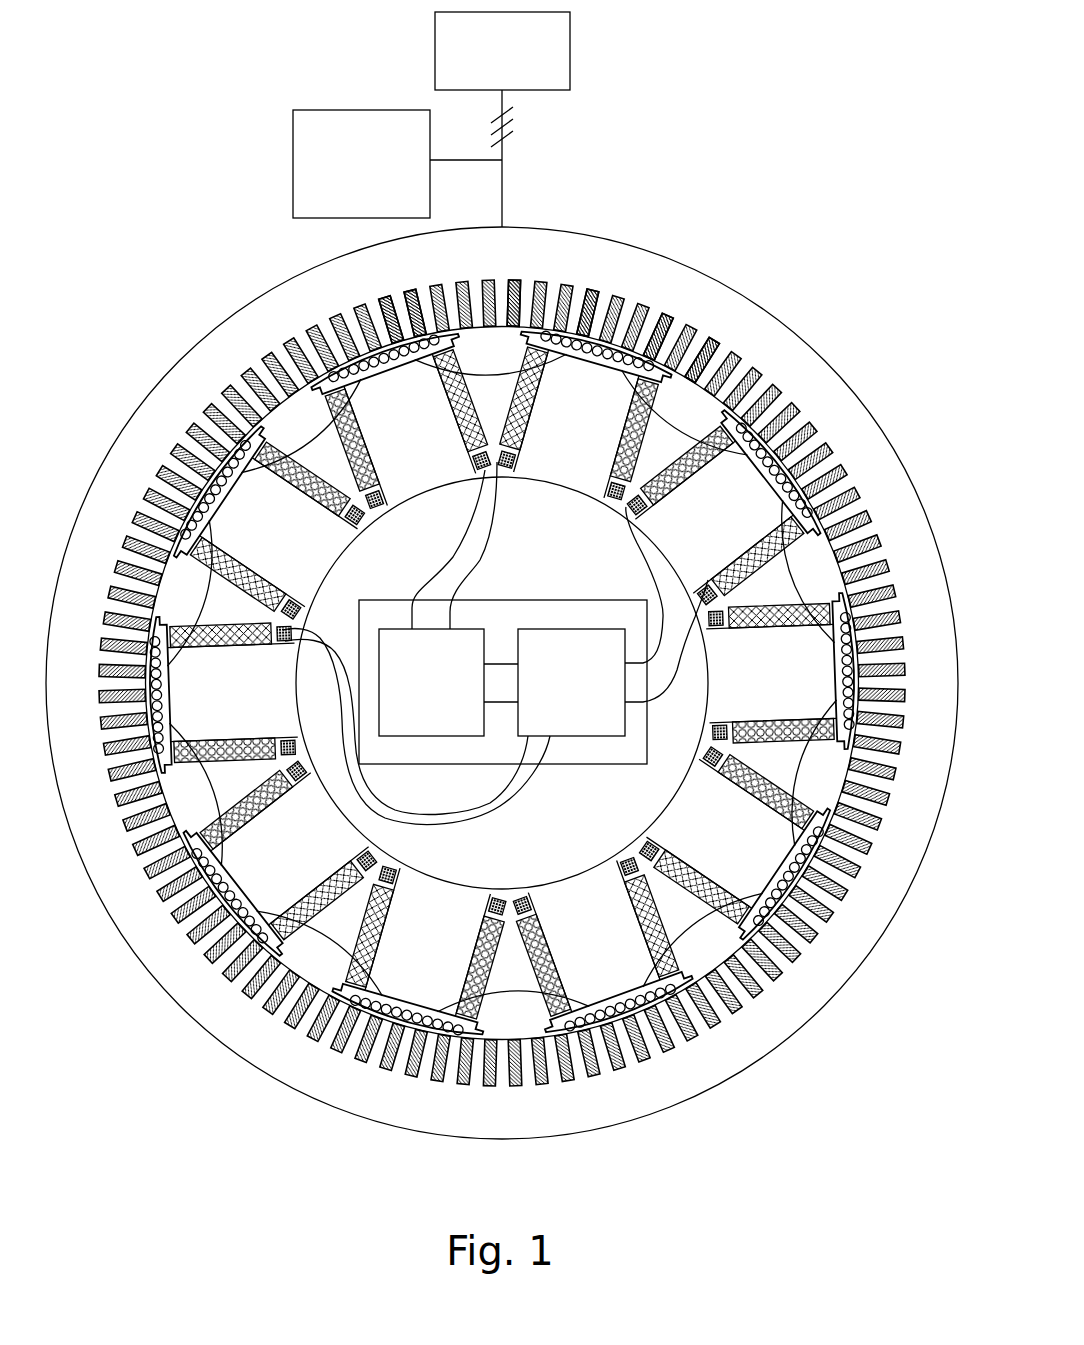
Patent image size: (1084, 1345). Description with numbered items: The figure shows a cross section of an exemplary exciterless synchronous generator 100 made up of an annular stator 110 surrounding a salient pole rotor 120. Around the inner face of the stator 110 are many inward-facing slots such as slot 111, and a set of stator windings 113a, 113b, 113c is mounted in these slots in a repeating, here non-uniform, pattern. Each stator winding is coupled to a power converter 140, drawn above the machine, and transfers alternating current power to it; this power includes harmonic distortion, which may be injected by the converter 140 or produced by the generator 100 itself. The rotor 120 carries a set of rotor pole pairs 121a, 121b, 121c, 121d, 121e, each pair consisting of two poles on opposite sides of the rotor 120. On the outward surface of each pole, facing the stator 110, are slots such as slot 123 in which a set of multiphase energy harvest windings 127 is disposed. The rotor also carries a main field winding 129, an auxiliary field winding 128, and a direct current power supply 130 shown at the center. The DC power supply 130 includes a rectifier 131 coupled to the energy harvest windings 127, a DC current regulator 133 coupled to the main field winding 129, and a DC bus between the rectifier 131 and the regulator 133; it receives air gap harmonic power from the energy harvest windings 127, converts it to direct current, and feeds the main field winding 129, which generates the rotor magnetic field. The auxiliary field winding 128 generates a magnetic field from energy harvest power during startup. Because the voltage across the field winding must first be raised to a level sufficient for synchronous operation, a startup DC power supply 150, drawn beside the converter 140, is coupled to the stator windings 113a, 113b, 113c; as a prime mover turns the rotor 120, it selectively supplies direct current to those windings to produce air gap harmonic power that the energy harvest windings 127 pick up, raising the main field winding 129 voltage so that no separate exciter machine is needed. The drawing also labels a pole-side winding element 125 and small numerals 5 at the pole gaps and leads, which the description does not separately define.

The synchronous generator 100 is at (831, 294).
The stator 110 is at (257, 300).
The slot 111 is at (337, 317).
The stator winding 113a is at (379, 299).
The stator winding 113b is at (410, 291).
The stator winding 113c is at (514, 280).
The rotor 120 is at (502, 683).
The rotor pole pair 121a is at (501, 683).
The rotor pole pair 121b is at (502, 683).
The rotor pole pair 121c is at (502, 683).
The rotor pole pair 121d is at (502, 683).
The rotor pole pair 121e is at (502, 683).
The slot 123 is at (409, 357).
The field winding 125 is at (343, 480).
The energy harvest windings 127 is at (470, 512).
The auxiliary field winding 128 is at (520, 800).
The main field winding 129 is at (646, 580).
The DC power supply 130 is at (557, 600).
The rectifier 131 is at (418, 737).
The DC current regulator 133 is at (610, 737).
The power converter 140 is at (502, 119).
The startup DC power supply 150 is at (397, 164).
The air gap / interpole space 5 is at (700, 390).